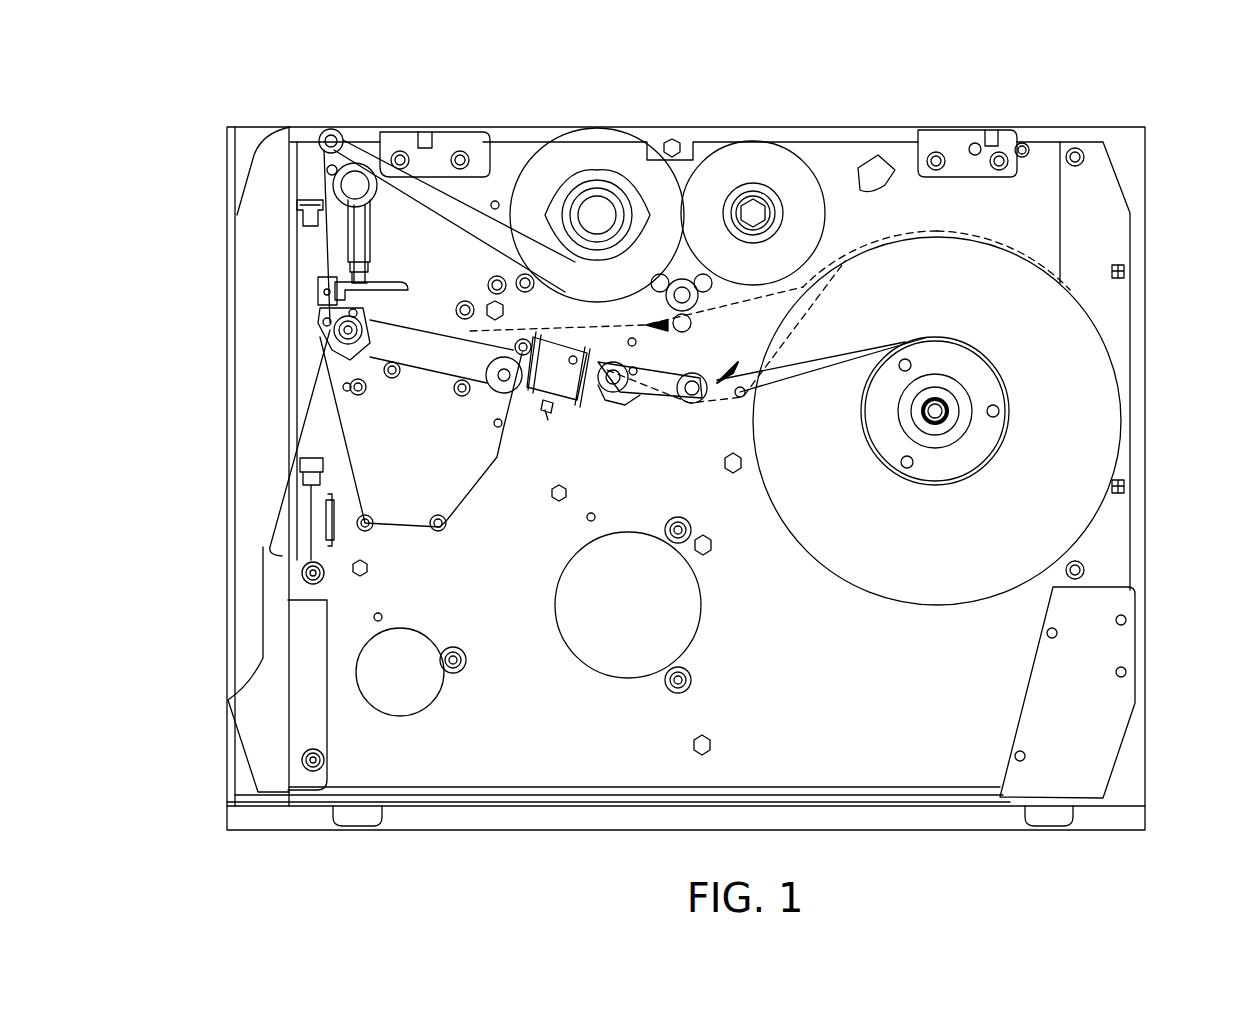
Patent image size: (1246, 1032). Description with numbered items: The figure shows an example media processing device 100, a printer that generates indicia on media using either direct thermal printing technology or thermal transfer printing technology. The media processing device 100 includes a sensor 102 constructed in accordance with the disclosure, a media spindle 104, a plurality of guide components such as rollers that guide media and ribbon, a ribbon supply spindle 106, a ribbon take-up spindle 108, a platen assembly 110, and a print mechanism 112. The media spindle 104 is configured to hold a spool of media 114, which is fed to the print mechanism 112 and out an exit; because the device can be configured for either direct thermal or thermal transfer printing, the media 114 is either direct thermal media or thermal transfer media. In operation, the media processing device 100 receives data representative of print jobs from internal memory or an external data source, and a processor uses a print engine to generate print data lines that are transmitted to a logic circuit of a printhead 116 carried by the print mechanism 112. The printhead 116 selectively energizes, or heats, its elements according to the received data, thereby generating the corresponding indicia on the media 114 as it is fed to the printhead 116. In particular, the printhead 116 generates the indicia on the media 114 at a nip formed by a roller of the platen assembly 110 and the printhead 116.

The media processing device 100 is at (263, 64).
The sensor 102 is at (558, 330).
The media spindle 104 is at (947, 417).
The ribbon supply spindle 106 is at (765, 162).
The ribbon take-up spindle 108 is at (607, 162).
The platen assembly 110 is at (347, 330).
The print mechanism 112 is at (298, 272).
The media 114 is at (1072, 358).
The printhead 116 is at (330, 293).